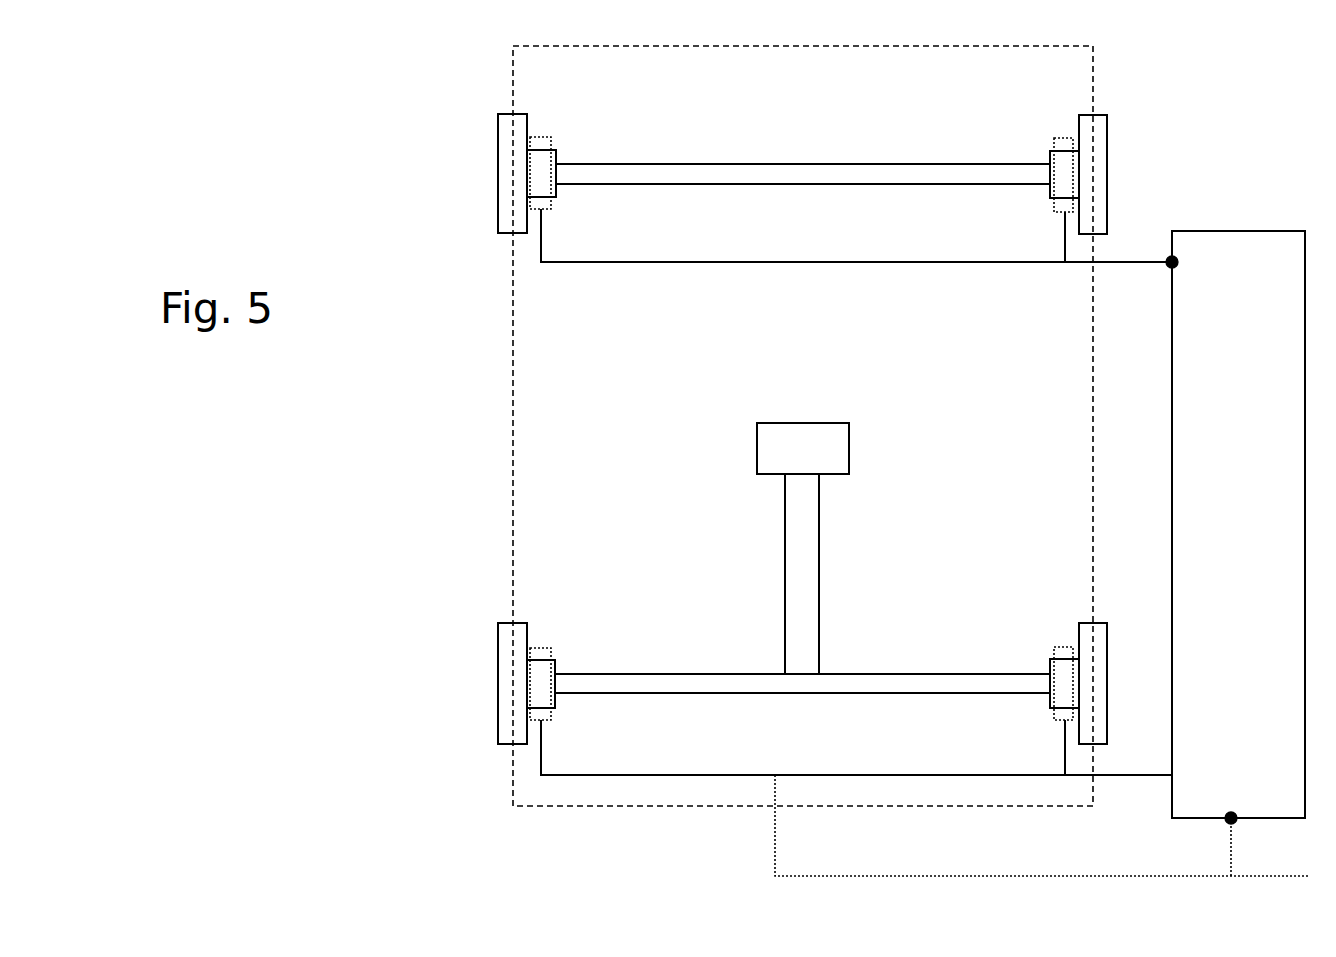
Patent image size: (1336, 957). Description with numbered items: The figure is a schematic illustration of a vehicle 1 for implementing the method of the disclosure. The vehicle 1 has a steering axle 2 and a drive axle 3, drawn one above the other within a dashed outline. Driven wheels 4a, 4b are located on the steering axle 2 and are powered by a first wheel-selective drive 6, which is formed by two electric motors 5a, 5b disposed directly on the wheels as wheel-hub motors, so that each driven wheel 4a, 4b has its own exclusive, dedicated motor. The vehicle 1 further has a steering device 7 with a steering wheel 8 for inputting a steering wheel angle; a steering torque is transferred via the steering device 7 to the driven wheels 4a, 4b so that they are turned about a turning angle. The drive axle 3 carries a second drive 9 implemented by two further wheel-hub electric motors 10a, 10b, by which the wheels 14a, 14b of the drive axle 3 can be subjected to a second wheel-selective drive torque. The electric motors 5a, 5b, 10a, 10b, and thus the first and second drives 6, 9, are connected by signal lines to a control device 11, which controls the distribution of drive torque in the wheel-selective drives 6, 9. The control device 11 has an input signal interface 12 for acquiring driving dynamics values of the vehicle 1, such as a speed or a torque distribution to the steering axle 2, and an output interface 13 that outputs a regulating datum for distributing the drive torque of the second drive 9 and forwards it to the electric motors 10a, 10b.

The vehicle 1 is at (1067, 92).
The steering axle 2 is at (803, 559).
The drive axle 3 is at (803, 142).
The driven wheel 4a is at (498, 674).
The driven wheel 4b is at (1107, 660).
The electric motor 5a is at (540, 648).
The electric motor 5b is at (1065, 647).
The first wheel-selective drive 6 is at (803, 654).
The steering device 7 is at (810, 558).
The steering wheel 8 is at (812, 463).
The second drive 9 is at (803, 144).
The electric motor 10a is at (540, 138).
The electric motor 10b is at (1063, 138).
The control device 11 is at (1279, 799).
The input signal interface 12 is at (1237, 823).
The output interface 13 is at (1168, 268).
The wheel 14a is at (498, 157).
The wheel 14b is at (1108, 165).